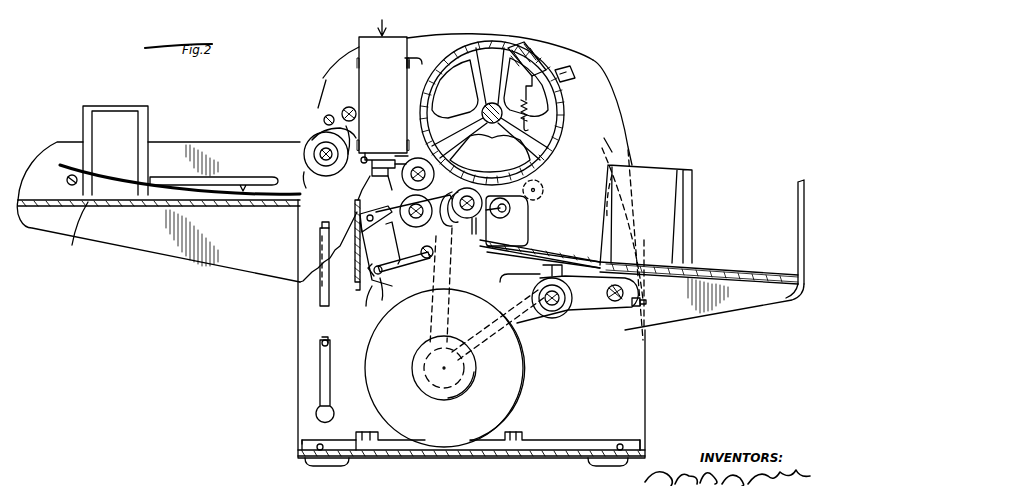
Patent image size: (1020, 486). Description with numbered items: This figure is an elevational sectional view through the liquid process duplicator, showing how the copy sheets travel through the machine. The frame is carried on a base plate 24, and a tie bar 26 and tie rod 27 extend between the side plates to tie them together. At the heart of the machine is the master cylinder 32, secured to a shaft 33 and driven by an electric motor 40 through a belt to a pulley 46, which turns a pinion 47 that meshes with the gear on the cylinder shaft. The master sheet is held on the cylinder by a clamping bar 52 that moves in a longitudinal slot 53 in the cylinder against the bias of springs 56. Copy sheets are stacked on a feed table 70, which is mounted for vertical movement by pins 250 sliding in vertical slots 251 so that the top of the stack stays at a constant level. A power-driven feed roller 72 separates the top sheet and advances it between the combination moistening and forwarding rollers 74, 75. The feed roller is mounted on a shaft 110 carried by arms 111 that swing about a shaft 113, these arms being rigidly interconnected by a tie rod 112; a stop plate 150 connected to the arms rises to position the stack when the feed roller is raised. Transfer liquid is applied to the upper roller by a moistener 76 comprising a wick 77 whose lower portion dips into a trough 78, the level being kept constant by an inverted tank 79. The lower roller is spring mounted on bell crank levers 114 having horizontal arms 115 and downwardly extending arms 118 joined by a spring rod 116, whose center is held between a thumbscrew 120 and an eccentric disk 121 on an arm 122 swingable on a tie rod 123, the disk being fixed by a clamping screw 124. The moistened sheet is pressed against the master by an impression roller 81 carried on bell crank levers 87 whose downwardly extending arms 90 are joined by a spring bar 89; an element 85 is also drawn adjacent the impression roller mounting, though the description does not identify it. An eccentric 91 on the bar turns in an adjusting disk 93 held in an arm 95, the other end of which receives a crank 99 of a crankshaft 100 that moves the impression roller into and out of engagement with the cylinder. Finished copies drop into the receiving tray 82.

The base plate 24 is at (386, 456).
The tie bar 26 is at (600, 66).
The tie rod 27 is at (344, 106).
The master cylinder 32 is at (560, 128).
The shaft 33 is at (494, 124).
The electric motor 40 is at (444, 440).
The pulley 46 is at (612, 148).
The pinion 47 is at (543, 184).
The clamping bar 52 is at (560, 66).
The longitudinal slot 53 is at (527, 48).
The springs 56 is at (528, 104).
The feed table 70 is at (187, 212).
The feed roller 72 is at (328, 142).
The upper moistening and forwarding roller 74 is at (434, 172).
The lower forwarding roller 75 is at (428, 224).
The moistener 76 is at (384, 19).
The wick 77 is at (392, 176).
The trough 78 is at (378, 160).
The tank 79 is at (370, 44).
The impression roller 81 is at (458, 232).
The receiving tray 82 is at (742, 247).
The spring 85 is at (475, 236).
The bell crank levers 87 is at (534, 242).
The spring bar 89 is at (544, 312).
The downwardly extending arms 90 is at (526, 288).
The eccentric 91 is at (566, 292).
The adjusting disk 93 is at (554, 306).
The arm 95 is at (576, 310).
The crank 99 is at (624, 290).
The crankshaft 100 is at (612, 304).
The shaft 110 is at (326, 150).
The arms 111 is at (322, 126).
The tie rod 112 is at (325, 118).
The shaft 113 is at (404, 156).
The bell crank levers 114 is at (364, 224).
The upper arms 115 is at (388, 222).
The spring rod 116 is at (389, 292).
The downwardly extending arms 118 is at (380, 240).
The thumbscrew 120 is at (363, 300).
The eccentric disk 121 is at (403, 262).
The arm 122 is at (384, 274).
The tie rod 123 is at (429, 260).
The clamping screw 124 is at (400, 243).
The stop plate 150 is at (358, 284).
The pins 250 is at (322, 228).
The vertical slots 251 is at (322, 291).